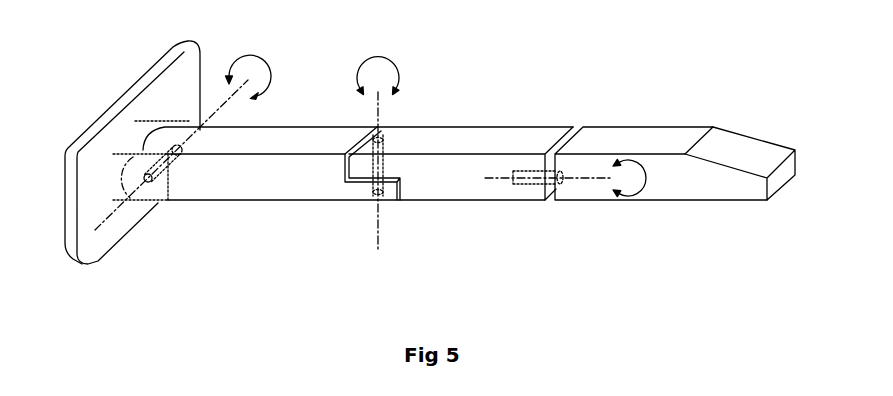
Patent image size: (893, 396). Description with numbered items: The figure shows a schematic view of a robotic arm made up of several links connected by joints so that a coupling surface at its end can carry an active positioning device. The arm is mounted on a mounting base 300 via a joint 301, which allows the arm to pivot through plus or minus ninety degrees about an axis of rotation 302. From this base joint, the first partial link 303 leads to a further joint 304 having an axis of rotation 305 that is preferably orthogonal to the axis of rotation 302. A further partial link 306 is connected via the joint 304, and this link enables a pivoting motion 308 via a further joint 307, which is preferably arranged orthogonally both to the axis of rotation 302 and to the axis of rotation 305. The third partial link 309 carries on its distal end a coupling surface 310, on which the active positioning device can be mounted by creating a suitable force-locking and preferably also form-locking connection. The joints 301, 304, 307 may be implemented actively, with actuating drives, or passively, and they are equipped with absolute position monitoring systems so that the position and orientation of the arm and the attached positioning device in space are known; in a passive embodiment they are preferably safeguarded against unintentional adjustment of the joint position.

The mounting base 300 is at (192, 54).
The joint 301 is at (152, 192).
The axis of rotation 302 is at (222, 101).
The first partial link 303 is at (216, 193).
The joint 304 is at (377, 193).
The axis of rotation 305 is at (378, 118).
The partial link 306 is at (488, 132).
The joint 307 is at (528, 186).
The pivoting motion 308 is at (590, 181).
The third partial link 309 is at (617, 130).
The coupling surface 310 is at (747, 143).